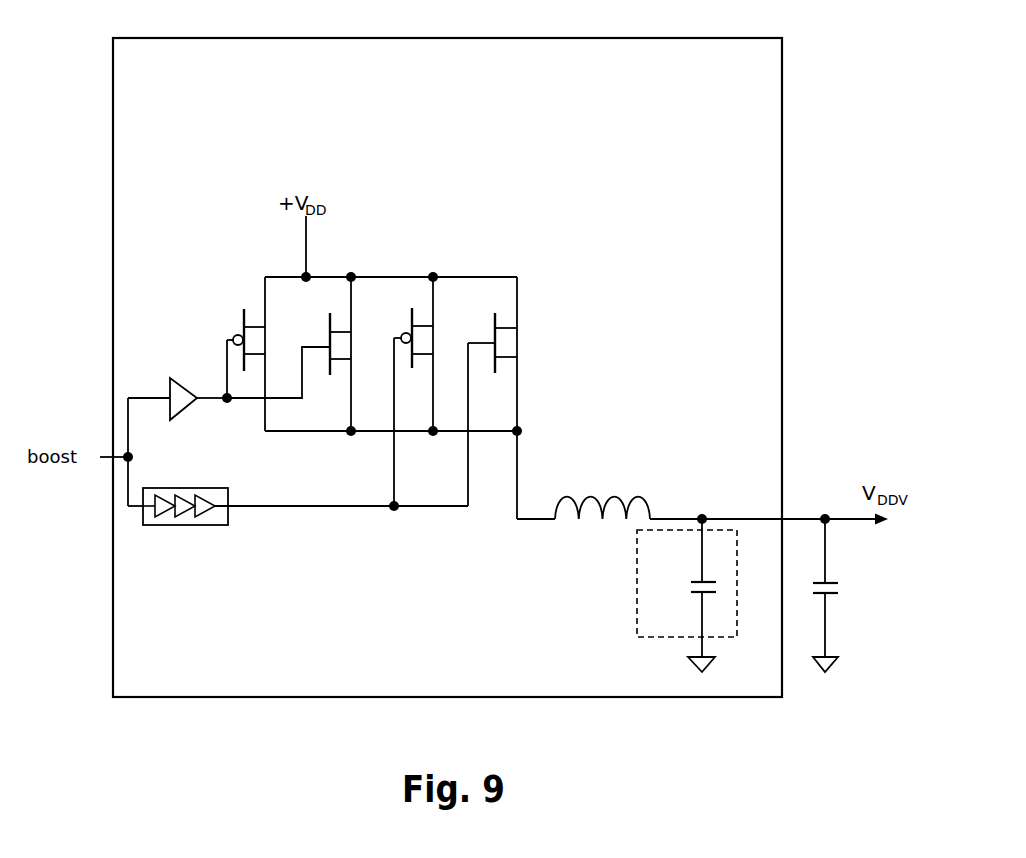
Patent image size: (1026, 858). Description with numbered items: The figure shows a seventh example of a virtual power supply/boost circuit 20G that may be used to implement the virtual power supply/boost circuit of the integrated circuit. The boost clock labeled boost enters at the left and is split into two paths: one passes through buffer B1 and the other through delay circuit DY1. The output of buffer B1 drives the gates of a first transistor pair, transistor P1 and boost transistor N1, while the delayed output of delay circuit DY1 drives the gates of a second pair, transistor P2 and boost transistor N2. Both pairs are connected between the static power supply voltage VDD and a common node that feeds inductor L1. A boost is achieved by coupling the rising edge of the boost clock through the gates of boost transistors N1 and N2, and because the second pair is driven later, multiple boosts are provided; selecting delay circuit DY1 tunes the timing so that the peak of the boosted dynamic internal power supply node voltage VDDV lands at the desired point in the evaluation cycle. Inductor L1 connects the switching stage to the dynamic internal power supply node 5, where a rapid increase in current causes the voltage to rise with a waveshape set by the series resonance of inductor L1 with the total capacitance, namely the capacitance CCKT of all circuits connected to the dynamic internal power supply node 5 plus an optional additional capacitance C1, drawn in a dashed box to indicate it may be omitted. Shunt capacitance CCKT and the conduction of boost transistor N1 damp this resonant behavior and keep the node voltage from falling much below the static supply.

The virtual power supply/boost circuit 20G is at (515, 76).
The dynamic internal power supply node 5 is at (808, 517).
The transistor P1 is at (259, 353).
The boost transistor N1 is at (305, 355).
The transistor P2 is at (426, 409).
The boost transistor N2 is at (509, 409).
The buffer B1 is at (180, 387).
The delay circuit DY1 is at (298, 496).
The inductor L1 is at (602, 493).
The additional capacitance C1 is at (687, 595).
The capacitance of all of the circuits connected to the dynamic internal power suppl CCKT is at (857, 595).